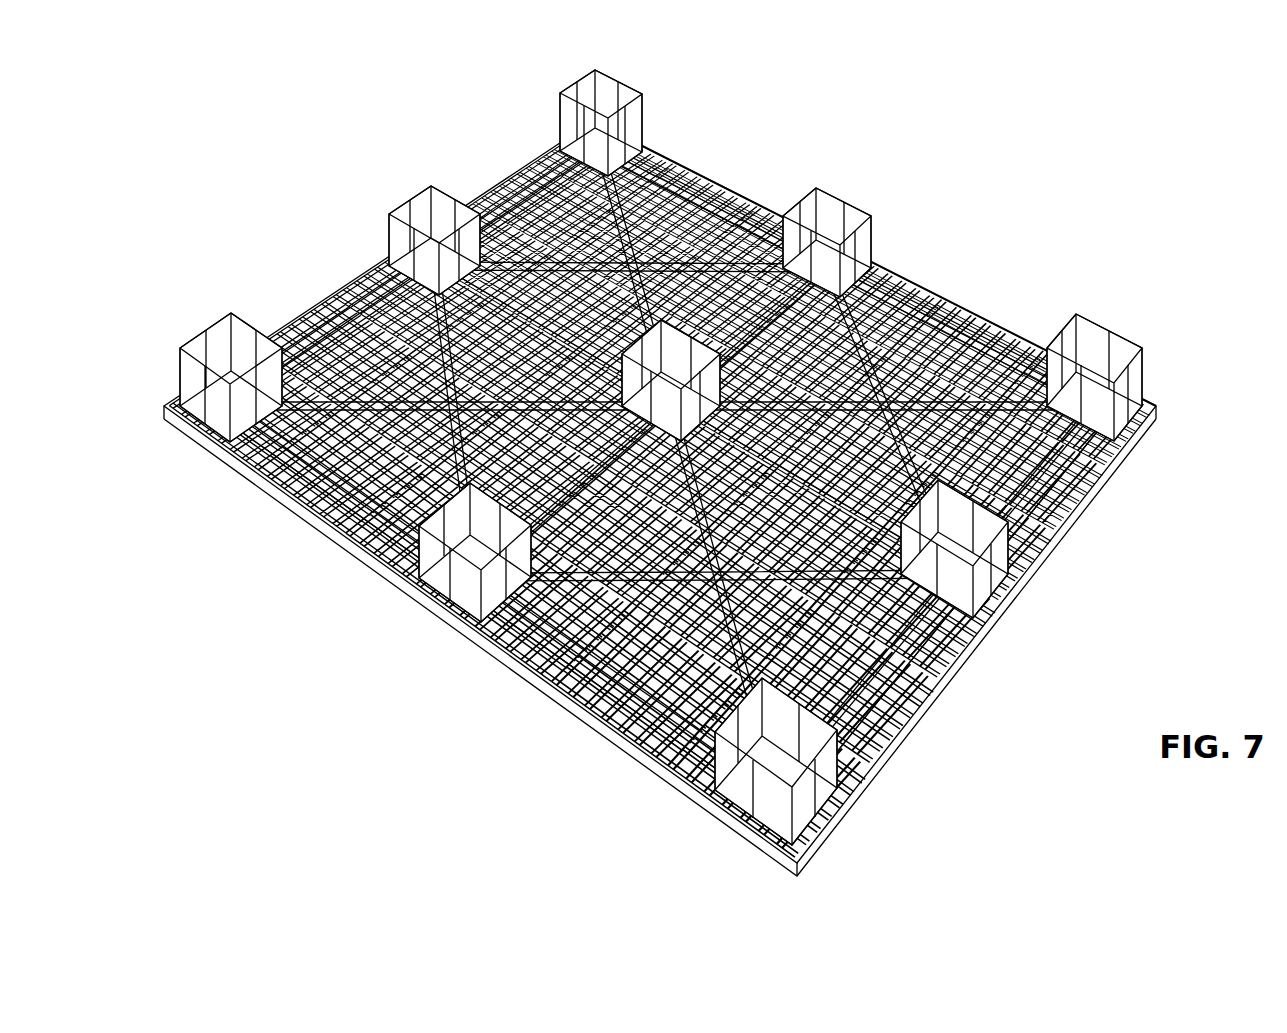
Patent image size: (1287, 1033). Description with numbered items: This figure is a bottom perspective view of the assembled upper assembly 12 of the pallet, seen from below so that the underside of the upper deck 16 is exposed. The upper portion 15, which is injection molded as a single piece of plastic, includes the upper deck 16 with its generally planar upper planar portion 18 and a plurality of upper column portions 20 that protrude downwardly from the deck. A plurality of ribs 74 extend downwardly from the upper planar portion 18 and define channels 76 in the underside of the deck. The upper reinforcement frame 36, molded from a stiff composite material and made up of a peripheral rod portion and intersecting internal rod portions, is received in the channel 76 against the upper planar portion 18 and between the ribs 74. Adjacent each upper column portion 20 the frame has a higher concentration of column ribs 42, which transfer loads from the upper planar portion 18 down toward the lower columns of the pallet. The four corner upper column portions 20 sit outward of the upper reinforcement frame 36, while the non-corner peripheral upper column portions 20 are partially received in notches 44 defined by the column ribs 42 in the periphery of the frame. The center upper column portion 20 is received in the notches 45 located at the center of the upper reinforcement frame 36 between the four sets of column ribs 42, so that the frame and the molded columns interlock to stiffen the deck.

The upper assembly 12 is at (1035, 155).
The upper portion 15 is at (930, 280).
The upper deck 16 is at (650, 762).
The upper planar portion 18 is at (590, 720).
The upper column portions 20 is at (650, 128).
The upper reinforcement frame 36 is at (960, 290).
The column ribs 42 is at (606, 128).
The notch 44 is at (850, 235).
The notches 45 is at (540, 670).
The ribs 74 is at (745, 185).
The channels 76 is at (1000, 335).